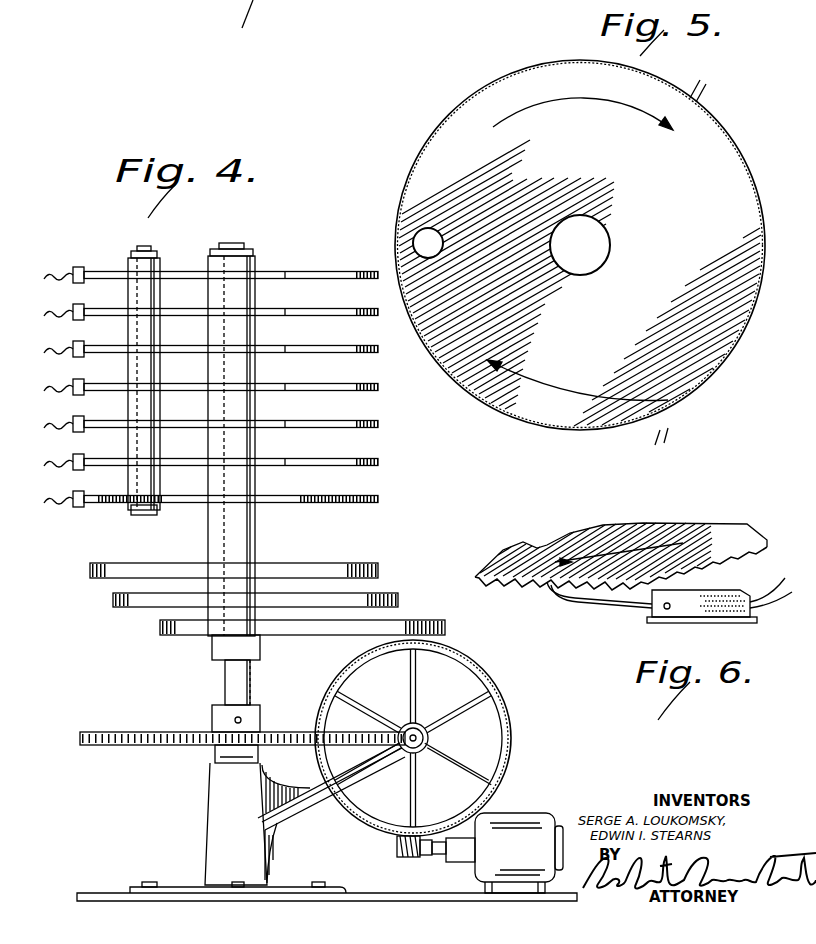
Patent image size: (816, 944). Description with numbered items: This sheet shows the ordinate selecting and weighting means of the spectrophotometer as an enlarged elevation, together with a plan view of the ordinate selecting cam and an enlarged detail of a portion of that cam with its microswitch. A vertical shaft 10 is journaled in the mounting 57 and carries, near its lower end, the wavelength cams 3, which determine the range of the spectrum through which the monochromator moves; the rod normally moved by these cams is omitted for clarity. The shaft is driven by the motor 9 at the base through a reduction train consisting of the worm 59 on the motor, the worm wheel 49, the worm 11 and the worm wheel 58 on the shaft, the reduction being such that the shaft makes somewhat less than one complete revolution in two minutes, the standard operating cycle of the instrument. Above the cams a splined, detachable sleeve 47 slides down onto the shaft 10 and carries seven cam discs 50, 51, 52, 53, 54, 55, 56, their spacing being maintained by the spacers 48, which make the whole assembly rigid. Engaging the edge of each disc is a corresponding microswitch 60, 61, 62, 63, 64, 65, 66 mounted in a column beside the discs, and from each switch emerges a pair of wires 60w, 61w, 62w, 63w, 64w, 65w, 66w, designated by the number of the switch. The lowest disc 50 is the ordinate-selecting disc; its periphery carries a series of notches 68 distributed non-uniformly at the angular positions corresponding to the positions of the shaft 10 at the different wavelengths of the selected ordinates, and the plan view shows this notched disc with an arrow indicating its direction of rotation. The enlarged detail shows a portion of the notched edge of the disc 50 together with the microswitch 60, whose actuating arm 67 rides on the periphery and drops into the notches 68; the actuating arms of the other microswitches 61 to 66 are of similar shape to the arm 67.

In FIG. 4, the wavelength cams 3 is at (150, 627).
In FIG. 4, the motor 9 is at (548, 813).
In FIG. 4, the shaft 10 is at (225, 688).
In FIG. 4, the worm 11 is at (402, 722).
In FIG. 4, the splined detachable sleeve 47 is at (256, 270).
In FIG. 4, the spacers 48 is at (158, 288).
In FIG. 4, the worm wheel 49 is at (511, 750).
In FIG. 4, the ordinate-selecting disc 50 is at (349, 496).
In FIG. 5, the ordinate-selecting disc 50 is at (680, 406).
In FIG. 6, the ordinate-selecting disc 50 is at (603, 527).
In FIG. 4, the cam disc 51 is at (349, 459).
In FIG. 4, the cam disc 52 is at (349, 421).
In FIG. 4, the cam disc 53 is at (349, 384).
In FIG. 4, the cam disc 54 is at (349, 346).
In FIG. 4, the cam disc 55 is at (349, 309).
In FIG. 4, the cam disc 56 is at (349, 272).
In FIG. 4, the mounting 57 is at (327, 822).
In FIG. 4, the worm wheel 58 is at (288, 732).
In FIG. 4, the worm 59 is at (412, 860).
In FIG. 4, the microswitch 60 is at (84, 490).
In FIG. 6, the microswitch 60 is at (660, 622).
In FIG. 4, the microswitch 61 is at (84, 453).
In FIG. 4, the microswitch 62 is at (84, 415).
In FIG. 4, the microswitch 63 is at (84, 378).
In FIG. 4, the microswitch 64 is at (84, 340).
In FIG. 4, the microswitch 65 is at (84, 303).
In FIG. 4, the microswitch 66 is at (84, 266).
In FIG. 4, the wires 60w is at (57, 491).
In FIG. 6, the wires 60w is at (769, 614).
In FIG. 4, the wires 61w is at (57, 454).
In FIG. 4, the wires 62w is at (57, 416).
In FIG. 4, the wires 63w is at (57, 379).
In FIG. 4, the wires 64w is at (57, 341).
In FIG. 4, the wires 65w is at (57, 304).
In FIG. 4, the wires 66w is at (57, 267).
In FIG. 6, the actuating arm 67 is at (588, 604).
In FIG. 5, the notches 68 is at (676, 95).
In FIG. 6, the notches 68 is at (508, 584).